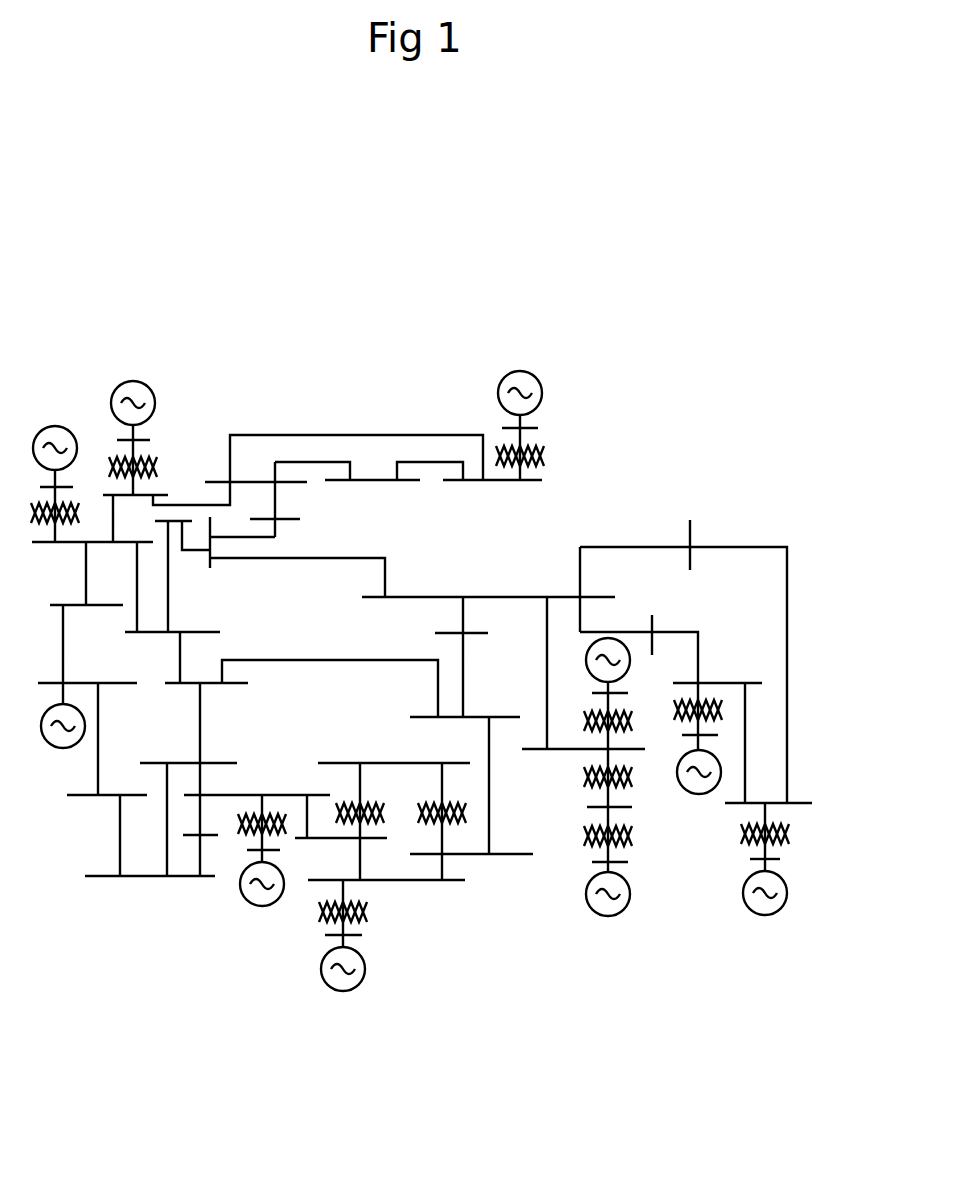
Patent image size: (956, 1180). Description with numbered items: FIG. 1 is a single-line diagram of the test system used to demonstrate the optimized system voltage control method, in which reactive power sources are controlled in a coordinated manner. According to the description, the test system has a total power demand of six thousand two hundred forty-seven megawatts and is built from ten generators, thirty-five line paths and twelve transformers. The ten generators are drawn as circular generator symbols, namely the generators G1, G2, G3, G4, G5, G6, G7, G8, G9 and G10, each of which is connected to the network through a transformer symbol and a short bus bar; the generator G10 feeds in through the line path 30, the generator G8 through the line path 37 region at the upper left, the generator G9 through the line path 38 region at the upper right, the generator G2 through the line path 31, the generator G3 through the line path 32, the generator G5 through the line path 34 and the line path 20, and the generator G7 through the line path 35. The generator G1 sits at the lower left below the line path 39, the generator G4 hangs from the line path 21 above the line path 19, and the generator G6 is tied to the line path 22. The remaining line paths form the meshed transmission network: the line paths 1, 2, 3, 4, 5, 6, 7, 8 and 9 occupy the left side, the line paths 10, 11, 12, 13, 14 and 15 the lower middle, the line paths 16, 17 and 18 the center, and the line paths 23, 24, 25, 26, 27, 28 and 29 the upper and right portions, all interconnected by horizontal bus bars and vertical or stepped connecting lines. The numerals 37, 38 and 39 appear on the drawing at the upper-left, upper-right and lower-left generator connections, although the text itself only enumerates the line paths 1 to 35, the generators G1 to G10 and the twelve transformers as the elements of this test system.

The line path 1 is at (86, 594).
The line path 2 is at (91, 553).
The line path 3 is at (172, 621).
The line path 4 is at (206, 696).
The line path 5 is at (188, 753).
The line path 6 is at (257, 783).
The line path 7 is at (202, 824).
The line path 8 is at (150, 865).
The line path 9 is at (107, 785).
The line path 10 is at (386, 895).
The line path 11 is at (353, 838).
The line path 12 is at (394, 751).
The line path 13 is at (471, 867).
The line path 14 is at (458, 706).
The line path 15 is at (465, 647).
The line path 16 is at (488, 608).
The line path 17 is at (214, 554).
The line path 18 is at (160, 525).
The line path 19 is at (581, 764).
The line path 20 is at (596, 810).
The line path 21 is at (651, 625).
The line path 22 is at (717, 673).
The line path 23 is at (777, 793).
The line path 24 is at (691, 534).
The line path 25 is at (148, 488).
The line path 26 is at (252, 469).
The line path 27 is at (288, 520).
The line path 28 is at (372, 493).
The line path 29 is at (509, 481).
The line path 30 is at (47, 499).
The line path 31 is at (274, 840).
The line path 32 is at (357, 924).
The line path 34 is at (597, 820).
The line path 35 is at (777, 847).
The generator bus 37 is at (144, 455).
The generator bus 38 is at (536, 442).
The bus 39 is at (76, 685).
The generator G1 is at (63, 739).
The generator G2 is at (262, 897).
The generator G3 is at (343, 980).
The generator G4 is at (595, 660).
The generator G5 is at (608, 908).
The generator G6 is at (699, 785).
The generator G7 is at (765, 906).
The generator G8 is at (149, 403).
The generator G9 is at (507, 393).
The generator G10 is at (55, 439).